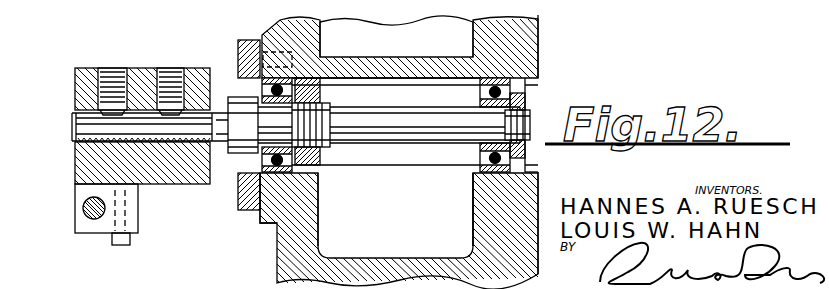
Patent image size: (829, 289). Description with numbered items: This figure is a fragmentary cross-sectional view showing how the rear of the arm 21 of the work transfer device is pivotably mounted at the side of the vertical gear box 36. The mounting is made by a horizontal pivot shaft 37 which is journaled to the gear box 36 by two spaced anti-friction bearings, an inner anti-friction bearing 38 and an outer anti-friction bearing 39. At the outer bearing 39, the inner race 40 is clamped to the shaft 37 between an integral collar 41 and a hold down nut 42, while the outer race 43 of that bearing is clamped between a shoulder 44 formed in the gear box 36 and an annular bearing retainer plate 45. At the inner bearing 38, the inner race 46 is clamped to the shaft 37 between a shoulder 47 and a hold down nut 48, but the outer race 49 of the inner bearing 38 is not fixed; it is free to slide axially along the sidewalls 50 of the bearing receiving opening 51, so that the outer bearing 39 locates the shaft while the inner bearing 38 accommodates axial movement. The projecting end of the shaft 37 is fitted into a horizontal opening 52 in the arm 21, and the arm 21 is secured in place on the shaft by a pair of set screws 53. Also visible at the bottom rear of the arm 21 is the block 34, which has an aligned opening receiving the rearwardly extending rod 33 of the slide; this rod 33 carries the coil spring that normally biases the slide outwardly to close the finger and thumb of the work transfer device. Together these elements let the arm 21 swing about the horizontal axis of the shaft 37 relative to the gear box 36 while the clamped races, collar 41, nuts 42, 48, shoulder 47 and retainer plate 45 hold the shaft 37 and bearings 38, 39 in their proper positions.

The arm 21 is at (73, 100).
The rod 33 is at (96, 232).
The block 34 is at (139, 209).
The gear box 36 is at (540, 32).
The pivot shaft 37 is at (402, 148).
The inner anti-friction bearing 38 is at (478, 183).
The outer anti-friction bearing 39 is at (262, 215).
The inner race 40 is at (318, 154).
The integral collar 41 is at (232, 158).
The hold down nut 42 is at (320, 97).
The outer race 43 is at (282, 178).
The shoulder 44 is at (268, 78).
The annular bearing retainer plate 45 is at (237, 50).
The inner race 46 is at (483, 150).
The shoulder 47 is at (500, 127).
The hold down nut 48 is at (528, 96).
The outer race 49 is at (490, 86).
The sidewalls 50 is at (540, 78).
The bearing receiving opening 51 is at (526, 164).
The horizontal opening 52 is at (72, 134).
The set screws 53 is at (168, 74).